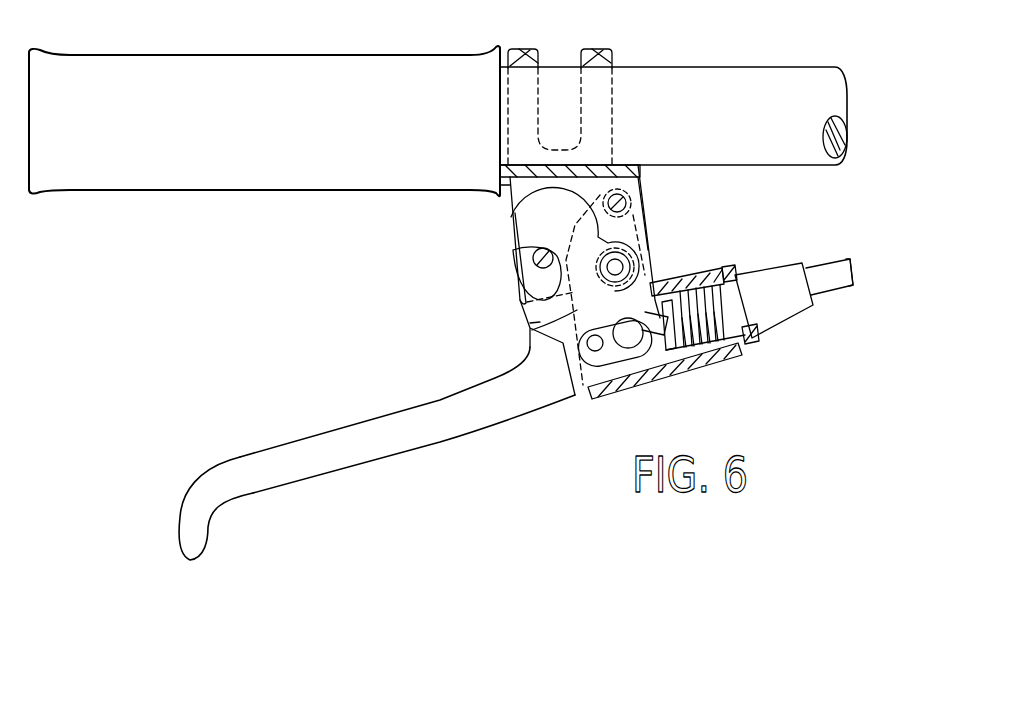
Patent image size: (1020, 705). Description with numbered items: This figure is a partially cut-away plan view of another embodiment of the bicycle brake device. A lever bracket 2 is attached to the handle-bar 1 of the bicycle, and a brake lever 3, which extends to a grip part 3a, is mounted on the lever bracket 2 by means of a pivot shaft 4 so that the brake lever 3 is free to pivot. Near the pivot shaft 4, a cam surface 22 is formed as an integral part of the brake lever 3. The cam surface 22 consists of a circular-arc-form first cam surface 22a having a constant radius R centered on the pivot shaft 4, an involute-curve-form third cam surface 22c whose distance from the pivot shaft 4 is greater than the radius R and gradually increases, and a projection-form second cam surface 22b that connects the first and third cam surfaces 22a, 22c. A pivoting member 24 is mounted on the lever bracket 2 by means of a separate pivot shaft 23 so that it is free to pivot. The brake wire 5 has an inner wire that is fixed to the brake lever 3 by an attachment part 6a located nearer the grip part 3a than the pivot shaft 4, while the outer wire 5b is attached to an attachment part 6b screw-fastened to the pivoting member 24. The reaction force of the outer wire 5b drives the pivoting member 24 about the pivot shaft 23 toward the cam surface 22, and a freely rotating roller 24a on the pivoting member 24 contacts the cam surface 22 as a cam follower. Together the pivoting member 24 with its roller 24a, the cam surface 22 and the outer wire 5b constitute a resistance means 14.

The handle-bar 1 is at (693, 78).
The lever bracket 2 is at (510, 245).
The brake lever 3 is at (384, 472).
The grip part 3a is at (322, 463).
The pivot shaft 4 is at (533, 259).
The constant radius R is at (584, 260).
The resistance means 14 is at (562, 228).
The cam surface 22 is at (570, 122).
The first cam surface 22a is at (540, 322).
The second cam surface 22b is at (607, 243).
The third cam surface 22c is at (590, 195).
The pivot shaft 23 is at (640, 195).
The pivoting member 24 is at (633, 206).
The roller 24a is at (640, 268).
The brake wire 5 is at (845, 296).
The outer wire 5b is at (838, 264).
The attachment part 6a is at (664, 378).
The attachment part 6b is at (790, 309).